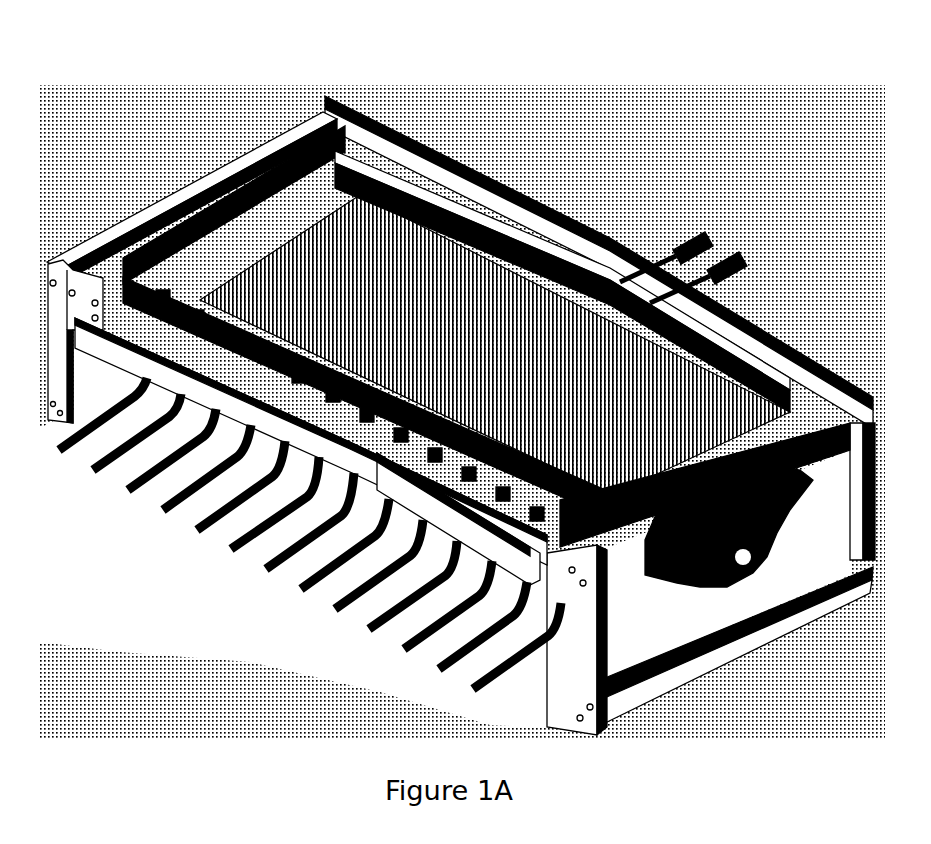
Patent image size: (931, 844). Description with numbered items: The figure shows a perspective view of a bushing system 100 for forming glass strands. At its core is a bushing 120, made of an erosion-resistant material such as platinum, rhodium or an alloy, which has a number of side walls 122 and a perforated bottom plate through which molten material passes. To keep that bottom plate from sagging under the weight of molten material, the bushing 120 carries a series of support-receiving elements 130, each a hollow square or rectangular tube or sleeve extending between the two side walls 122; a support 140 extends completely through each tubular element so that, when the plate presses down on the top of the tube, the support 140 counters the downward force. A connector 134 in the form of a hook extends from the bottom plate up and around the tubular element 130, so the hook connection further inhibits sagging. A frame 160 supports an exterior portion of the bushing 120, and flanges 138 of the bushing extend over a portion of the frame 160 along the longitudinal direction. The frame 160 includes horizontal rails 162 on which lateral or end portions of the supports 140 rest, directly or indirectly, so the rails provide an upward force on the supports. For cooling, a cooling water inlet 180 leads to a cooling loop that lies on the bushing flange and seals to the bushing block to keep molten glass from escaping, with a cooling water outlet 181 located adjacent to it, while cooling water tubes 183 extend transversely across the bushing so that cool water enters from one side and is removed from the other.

The bushing system 100 is at (797, 135).
The bushing 120 is at (358, 188).
The side walls 122 is at (613, 540).
The support-receiving element 130 is at (483, 307).
The connector 134 is at (708, 335).
The flanges 138 is at (248, 187).
The support 140 is at (600, 577).
The frame 160 is at (118, 237).
The horizontal rails 162 is at (185, 312).
The cooling water inlet 180 is at (752, 258).
The cooling water outlet 181 is at (714, 230).
The cooling water tubes 183 is at (343, 615).